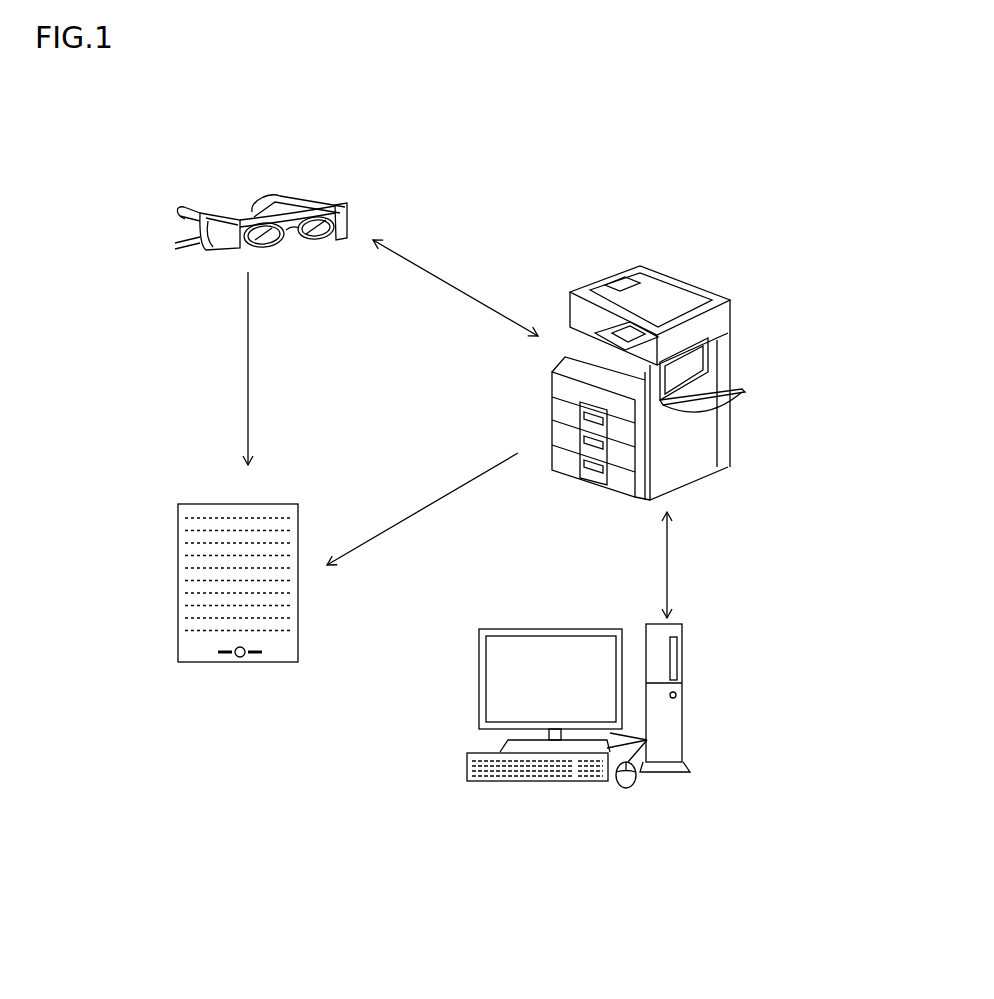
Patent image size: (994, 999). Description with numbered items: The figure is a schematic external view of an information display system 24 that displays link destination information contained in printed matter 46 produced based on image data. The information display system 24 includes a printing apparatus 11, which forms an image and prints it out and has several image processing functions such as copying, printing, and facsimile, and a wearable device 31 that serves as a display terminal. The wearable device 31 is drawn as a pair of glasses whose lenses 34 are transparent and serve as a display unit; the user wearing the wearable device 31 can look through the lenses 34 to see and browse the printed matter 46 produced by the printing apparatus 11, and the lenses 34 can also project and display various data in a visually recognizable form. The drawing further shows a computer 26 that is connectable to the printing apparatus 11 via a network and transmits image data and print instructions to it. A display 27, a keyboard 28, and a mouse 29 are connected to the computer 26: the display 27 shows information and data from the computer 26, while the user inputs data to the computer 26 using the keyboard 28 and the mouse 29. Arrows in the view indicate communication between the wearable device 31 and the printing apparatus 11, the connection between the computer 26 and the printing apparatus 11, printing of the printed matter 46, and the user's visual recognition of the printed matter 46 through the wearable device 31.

The information display system 24 is at (765, 170).
The wearable device 31 is at (170, 197).
The lenses 34 is at (266, 241).
The printing apparatus 11 is at (765, 342).
The printed matter 46 is at (284, 662).
The display 27 is at (530, 629).
The computer 26 is at (686, 703).
The keyboard 28 is at (487, 782).
The mouse 29 is at (627, 790).